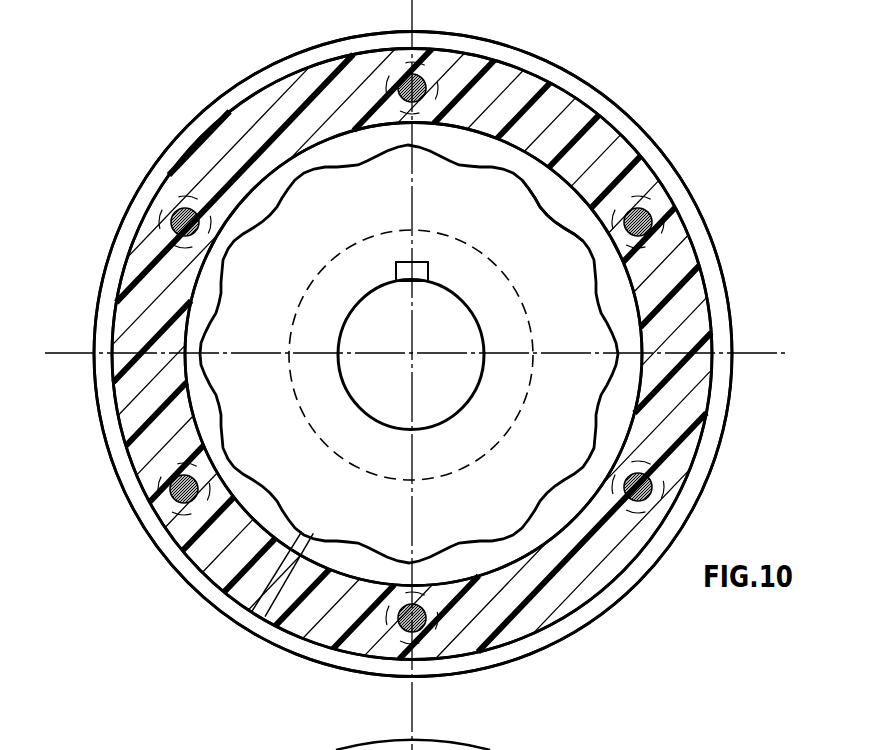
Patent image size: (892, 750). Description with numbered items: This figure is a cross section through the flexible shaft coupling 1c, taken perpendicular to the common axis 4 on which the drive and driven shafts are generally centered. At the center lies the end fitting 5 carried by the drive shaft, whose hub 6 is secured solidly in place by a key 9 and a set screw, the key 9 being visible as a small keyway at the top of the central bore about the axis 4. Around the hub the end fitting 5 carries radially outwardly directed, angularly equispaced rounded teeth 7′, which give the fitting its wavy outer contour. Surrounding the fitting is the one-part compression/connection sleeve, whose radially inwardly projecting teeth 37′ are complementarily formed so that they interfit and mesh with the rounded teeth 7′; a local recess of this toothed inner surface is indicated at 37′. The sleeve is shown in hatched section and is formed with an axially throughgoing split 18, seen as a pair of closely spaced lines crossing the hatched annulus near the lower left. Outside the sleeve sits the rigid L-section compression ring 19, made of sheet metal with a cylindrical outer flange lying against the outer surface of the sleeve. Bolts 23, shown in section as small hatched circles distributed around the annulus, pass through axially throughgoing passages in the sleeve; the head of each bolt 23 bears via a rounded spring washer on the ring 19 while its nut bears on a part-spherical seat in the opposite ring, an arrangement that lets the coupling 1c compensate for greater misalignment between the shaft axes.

The coupling 1c is at (80, 484).
The compression ring 19 is at (683, 198).
The rounded teeth 7′ is at (518, 153).
The bolt 23 is at (169, 223).
The end fitting 5 is at (531, 481).
The teeth 37′ is at (553, 204).
The hub 6 is at (298, 300).
The common axis 4 is at (412, 353).
The key 9 is at (428, 270).
The split 18 is at (282, 580).